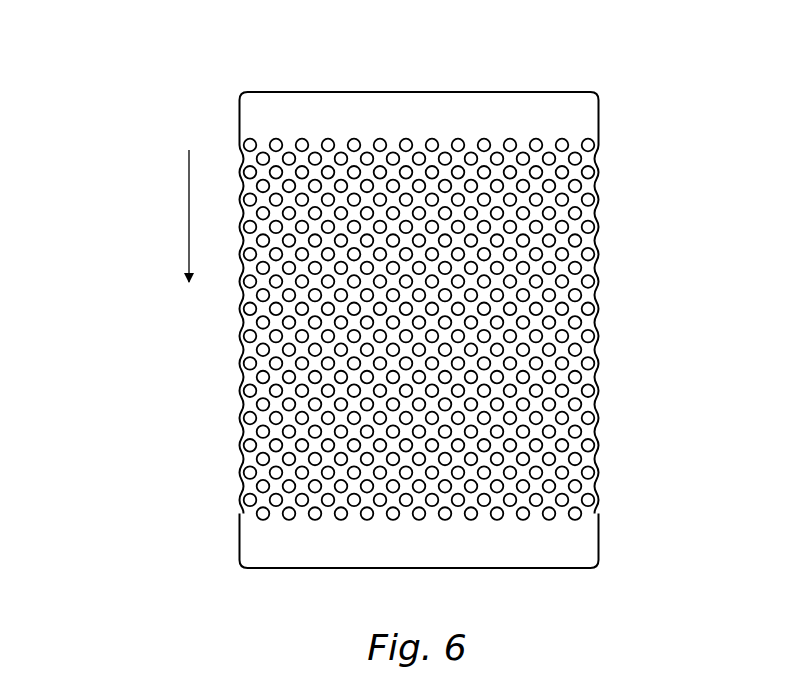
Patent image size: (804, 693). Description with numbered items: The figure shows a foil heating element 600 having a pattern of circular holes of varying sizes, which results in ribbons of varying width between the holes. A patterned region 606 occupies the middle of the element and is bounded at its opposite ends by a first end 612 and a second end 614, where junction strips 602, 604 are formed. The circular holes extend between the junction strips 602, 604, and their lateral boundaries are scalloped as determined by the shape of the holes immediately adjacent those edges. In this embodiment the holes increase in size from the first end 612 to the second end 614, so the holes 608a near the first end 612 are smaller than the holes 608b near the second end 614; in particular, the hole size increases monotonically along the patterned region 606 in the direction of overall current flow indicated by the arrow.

The fiber optic faceplate array 600 is at (94, 80).
The junction strip 602 is at (573, 115).
The junction strip 604 is at (575, 541).
The patterned region 606 is at (600, 297).
The holes near the first end 608a is at (249, 145).
The holes near the second end 608b is at (249, 500).
The first end 612 is at (312, 112).
The second end 614 is at (281, 525).